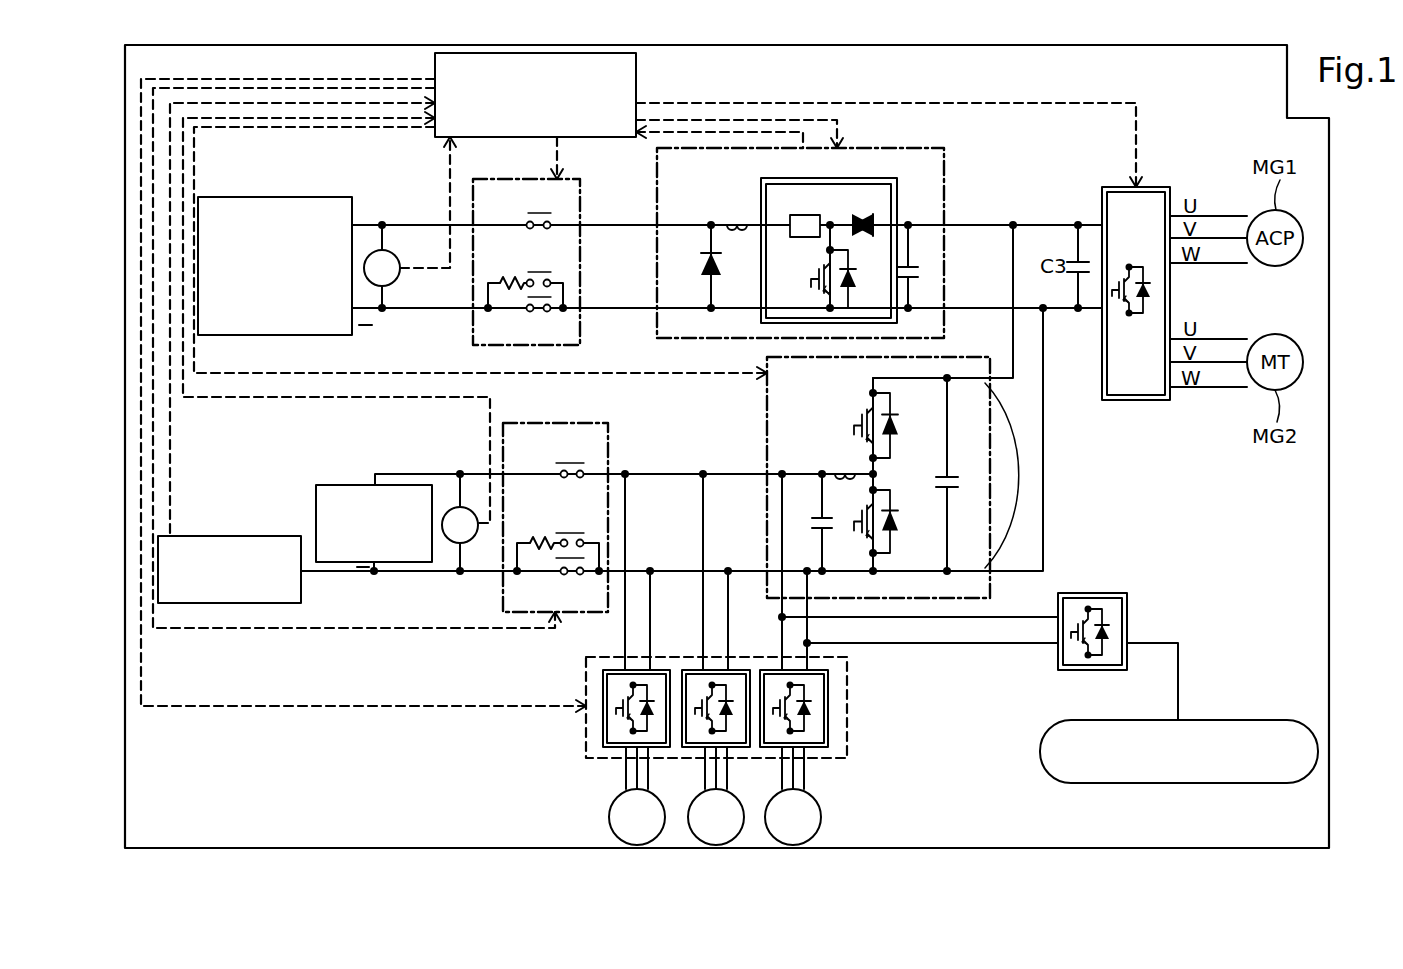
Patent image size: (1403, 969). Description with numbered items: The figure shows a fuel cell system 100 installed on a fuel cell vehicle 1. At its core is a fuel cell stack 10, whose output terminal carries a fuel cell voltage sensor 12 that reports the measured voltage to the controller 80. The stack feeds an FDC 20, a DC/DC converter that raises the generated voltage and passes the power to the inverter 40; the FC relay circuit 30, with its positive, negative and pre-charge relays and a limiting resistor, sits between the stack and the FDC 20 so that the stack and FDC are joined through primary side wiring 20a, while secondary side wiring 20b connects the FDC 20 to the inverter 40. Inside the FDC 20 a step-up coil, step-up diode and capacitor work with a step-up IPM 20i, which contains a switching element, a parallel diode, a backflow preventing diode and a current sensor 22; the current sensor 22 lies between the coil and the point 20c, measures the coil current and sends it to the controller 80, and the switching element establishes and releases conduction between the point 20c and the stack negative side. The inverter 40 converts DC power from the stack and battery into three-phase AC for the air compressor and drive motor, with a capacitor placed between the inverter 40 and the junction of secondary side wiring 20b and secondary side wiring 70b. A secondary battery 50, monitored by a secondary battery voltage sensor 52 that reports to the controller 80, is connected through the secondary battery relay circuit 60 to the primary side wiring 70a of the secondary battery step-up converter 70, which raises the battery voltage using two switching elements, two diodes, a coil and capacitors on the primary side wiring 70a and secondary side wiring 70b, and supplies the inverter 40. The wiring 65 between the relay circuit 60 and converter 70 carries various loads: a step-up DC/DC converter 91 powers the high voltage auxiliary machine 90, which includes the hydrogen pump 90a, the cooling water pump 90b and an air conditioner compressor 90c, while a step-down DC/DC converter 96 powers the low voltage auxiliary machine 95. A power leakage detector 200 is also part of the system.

The fuel cell vehicle 1 is at (1329, 160).
The fuel cell system 100 is at (1197, 135).
The fuel cell stack 10 is at (328, 197).
The fuel cell voltage sensor 12 is at (396, 258).
The FDC 20 is at (947, 160).
The primary side wiring 20a is at (672, 225).
The secondary side wiring 20b is at (925, 225).
The point 20c is at (830, 222).
The step-up IPM 20i is at (763, 179).
The current sensor 22 is at (800, 238).
The FC relay circuit 30 is at (582, 192).
The inverter 40 is at (1152, 187).
The secondary battery 50 is at (328, 485).
The secondary battery voltage sensor 52 is at (474, 536).
The secondary battery relay circuit 60 is at (610, 438).
The wiring 65 is at (685, 476).
The secondary battery step-up converter 70 is at (767, 425).
The primary side wiring 70a is at (775, 476).
The secondary side wiring 70b is at (1011, 475).
The controller 80 is at (636, 70).
The high voltage auxiliary machine 90 is at (683, 796).
The hydrogen pump 90a is at (664, 806).
The cooling water pump 90b is at (743, 806).
The air conditioner compressor 90c is at (821, 806).
The step-up DC/DC converter 91 is at (847, 708).
The low voltage auxiliary machine 95 is at (1151, 720).
The step-down DC/DC converter 96 is at (1090, 593).
The power leakage detector 200 is at (228, 536).